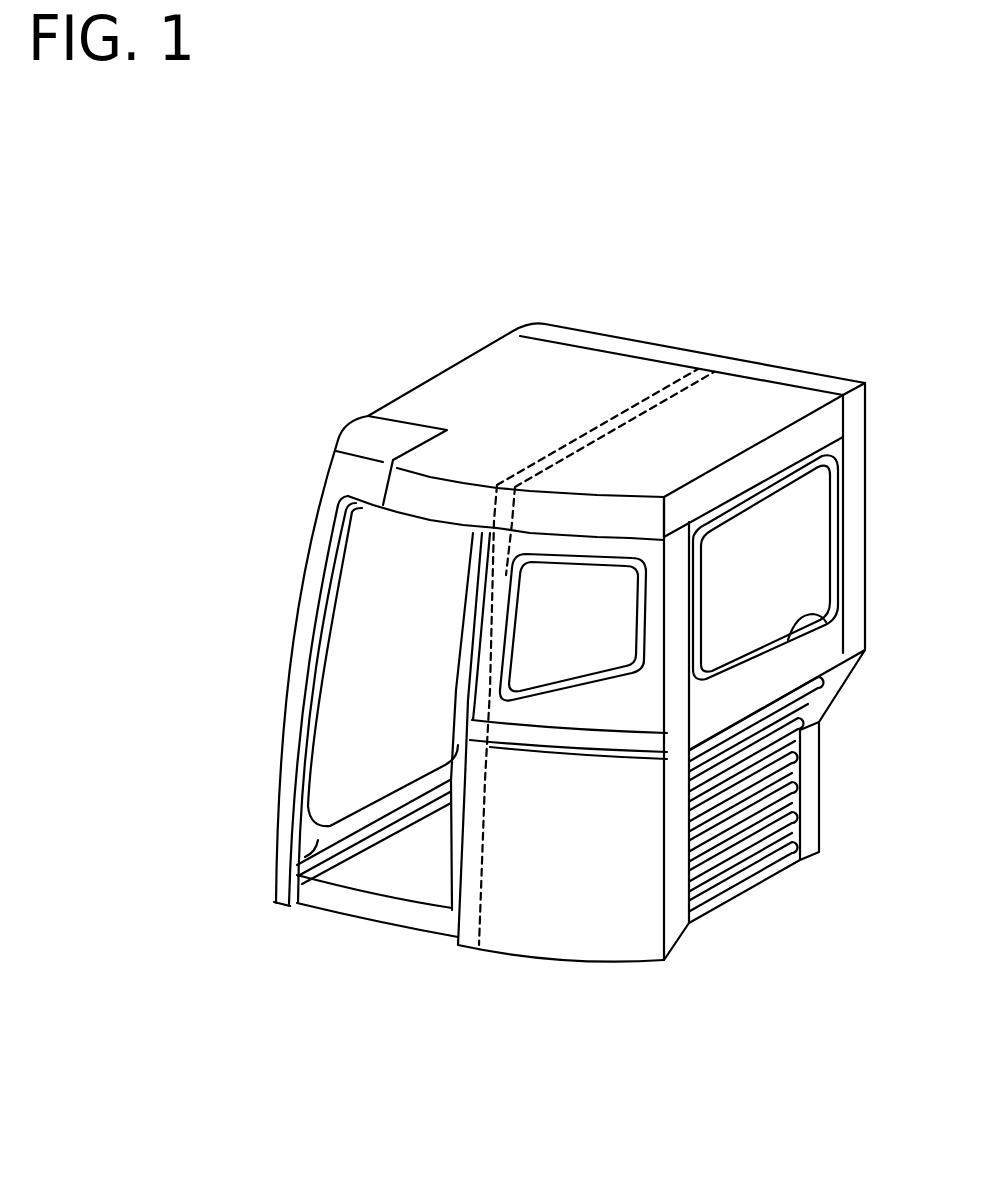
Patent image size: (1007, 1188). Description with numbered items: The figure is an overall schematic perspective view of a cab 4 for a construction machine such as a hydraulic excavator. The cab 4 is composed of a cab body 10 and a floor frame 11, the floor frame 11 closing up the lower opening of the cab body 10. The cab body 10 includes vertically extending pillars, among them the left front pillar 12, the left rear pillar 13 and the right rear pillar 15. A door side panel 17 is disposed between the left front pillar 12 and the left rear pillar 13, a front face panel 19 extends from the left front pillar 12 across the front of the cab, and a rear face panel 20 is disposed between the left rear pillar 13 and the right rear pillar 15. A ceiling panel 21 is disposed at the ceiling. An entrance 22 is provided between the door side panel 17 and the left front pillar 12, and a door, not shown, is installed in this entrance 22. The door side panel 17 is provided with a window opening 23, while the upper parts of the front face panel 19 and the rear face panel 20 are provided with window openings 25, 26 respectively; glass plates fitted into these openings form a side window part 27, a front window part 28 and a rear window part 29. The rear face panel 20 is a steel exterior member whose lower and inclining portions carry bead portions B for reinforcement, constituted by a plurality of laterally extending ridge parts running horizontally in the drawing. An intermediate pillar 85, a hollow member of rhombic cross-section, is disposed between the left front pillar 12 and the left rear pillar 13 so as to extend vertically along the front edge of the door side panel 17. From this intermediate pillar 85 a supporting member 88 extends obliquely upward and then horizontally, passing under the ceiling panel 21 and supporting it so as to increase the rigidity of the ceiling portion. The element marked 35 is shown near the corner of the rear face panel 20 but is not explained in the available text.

The cab 4 is at (412, 333).
The cab body 10 is at (670, 328).
The ceiling panel 21 is at (550, 360).
The supporting member 88 is at (563, 453).
The intermediate pillar 85 is at (486, 868).
The left front pillar 12 is at (297, 742).
The window opening 25 is at (338, 568).
The front face panel 19 is at (312, 853).
The side window part 27 is at (530, 635).
The window opening 23 is at (565, 690).
The front window part 28 is at (400, 763).
The entrance 22 is at (365, 872).
The floor frame 11 is at (425, 937).
The door side panel 17 is at (590, 930).
The left rear pillar 13 is at (686, 930).
The rear window part 29 is at (823, 507).
The right rear pillar 15 is at (857, 575).
The window opening 26 is at (828, 619).
The corner member 35 is at (840, 686).
The rear face panel 20 is at (779, 813).
The bead portions B is at (787, 760).